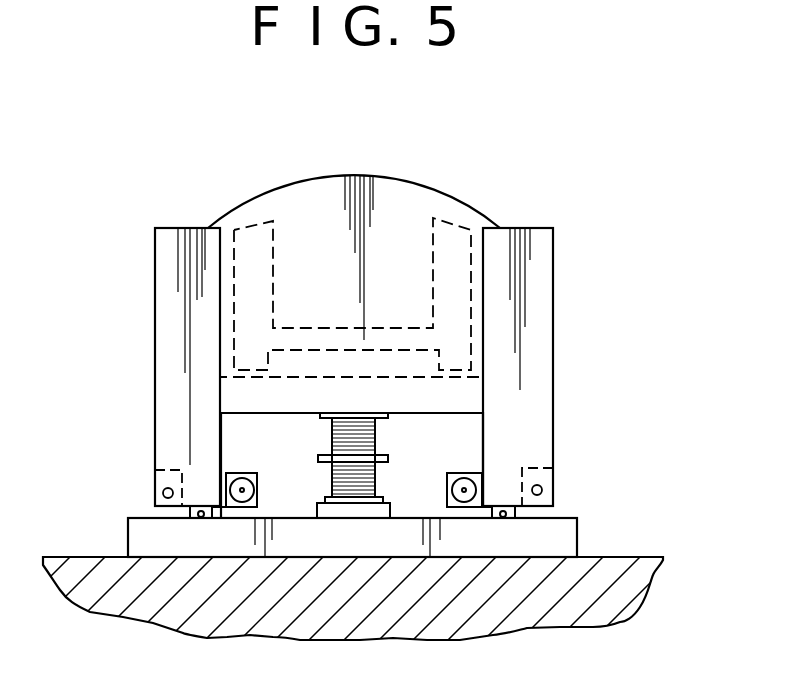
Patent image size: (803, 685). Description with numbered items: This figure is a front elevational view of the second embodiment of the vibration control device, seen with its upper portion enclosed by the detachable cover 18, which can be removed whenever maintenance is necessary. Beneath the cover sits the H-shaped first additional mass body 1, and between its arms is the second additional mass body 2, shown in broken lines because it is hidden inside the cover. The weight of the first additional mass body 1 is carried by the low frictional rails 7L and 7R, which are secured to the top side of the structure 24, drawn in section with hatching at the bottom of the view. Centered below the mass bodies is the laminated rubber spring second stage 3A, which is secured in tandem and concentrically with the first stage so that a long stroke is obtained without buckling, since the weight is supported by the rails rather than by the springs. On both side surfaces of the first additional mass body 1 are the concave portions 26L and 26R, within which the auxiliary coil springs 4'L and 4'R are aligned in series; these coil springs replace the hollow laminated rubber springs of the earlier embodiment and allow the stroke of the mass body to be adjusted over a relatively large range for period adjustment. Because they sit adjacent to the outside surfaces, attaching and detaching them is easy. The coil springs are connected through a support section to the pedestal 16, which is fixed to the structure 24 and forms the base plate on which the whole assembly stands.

The first additional mass body 1 is at (538, 376).
The second additional mass body 2 is at (252, 236).
The cover 18 is at (430, 181).
The laminated rubber spring second stage 3A is at (332, 437).
The concave portion 26L is at (160, 473).
The concave portion 26R is at (543, 475).
The coil spring 4'L is at (124, 486).
The coil spring 4'R is at (580, 491).
The rail 7L is at (201, 518).
The rail 7R is at (503, 518).
The pedestal 16 is at (560, 537).
The structure 24 is at (414, 616).